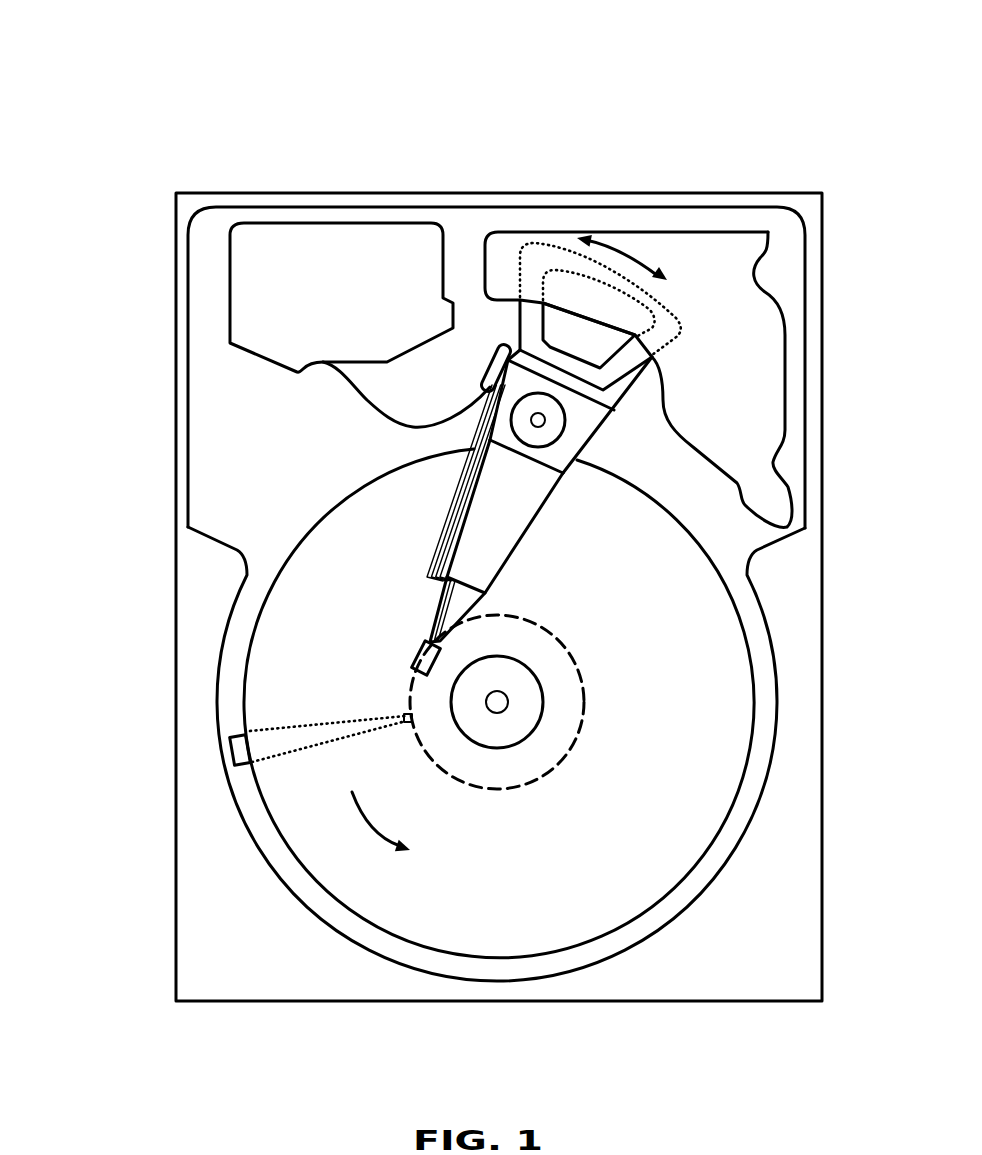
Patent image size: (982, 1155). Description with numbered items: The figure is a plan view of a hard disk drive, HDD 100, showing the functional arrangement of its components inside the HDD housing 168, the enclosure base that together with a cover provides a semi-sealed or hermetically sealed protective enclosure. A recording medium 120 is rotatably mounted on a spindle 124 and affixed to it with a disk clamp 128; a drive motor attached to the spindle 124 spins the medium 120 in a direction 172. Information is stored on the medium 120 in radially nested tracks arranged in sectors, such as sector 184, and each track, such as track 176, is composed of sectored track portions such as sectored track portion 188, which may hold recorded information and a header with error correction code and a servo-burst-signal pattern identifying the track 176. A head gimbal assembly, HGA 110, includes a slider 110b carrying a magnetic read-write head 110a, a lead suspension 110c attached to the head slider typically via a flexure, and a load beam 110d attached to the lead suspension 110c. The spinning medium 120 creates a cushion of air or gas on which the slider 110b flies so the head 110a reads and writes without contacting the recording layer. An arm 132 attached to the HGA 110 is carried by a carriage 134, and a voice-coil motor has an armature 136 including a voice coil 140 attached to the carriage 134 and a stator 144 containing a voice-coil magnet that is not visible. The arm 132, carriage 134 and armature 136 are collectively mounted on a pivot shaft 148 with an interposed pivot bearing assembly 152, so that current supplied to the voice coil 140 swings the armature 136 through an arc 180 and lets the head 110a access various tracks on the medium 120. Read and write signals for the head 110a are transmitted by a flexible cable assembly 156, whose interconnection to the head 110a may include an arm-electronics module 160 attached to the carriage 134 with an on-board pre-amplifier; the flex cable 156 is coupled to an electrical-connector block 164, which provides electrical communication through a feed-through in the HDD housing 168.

The hard disk drive 100 is at (98, 65).
The head gimbal assembly 110 is at (271, 524).
The magnetic read-write head 110a is at (418, 662).
The slider 110b is at (432, 628).
The lead suspension 110c is at (443, 605).
The load beam 110d is at (427, 577).
The recording medium 120 is at (680, 650).
The spindle 124 is at (497, 702).
The disk clamp 128 is at (523, 717).
The arm 132 is at (490, 537).
The carriage 134 is at (557, 453).
The armature 136 is at (517, 337).
The voice coil 140 is at (535, 310).
The stator 144 is at (750, 322).
The pivot shaft 148 is at (545, 420).
The pivot bearing assembly 152 is at (548, 432).
The flexible cable assembly 156 is at (353, 397).
The arm-electronics module 160 is at (490, 383).
The electrical-connector block 164 is at (255, 295).
The HDD housing 168 is at (802, 207).
The direction 172 is at (387, 828).
The track 176 is at (573, 662).
The arc 180 is at (623, 247).
The sector 184 is at (235, 745).
The sectored track portion 188 is at (405, 717).